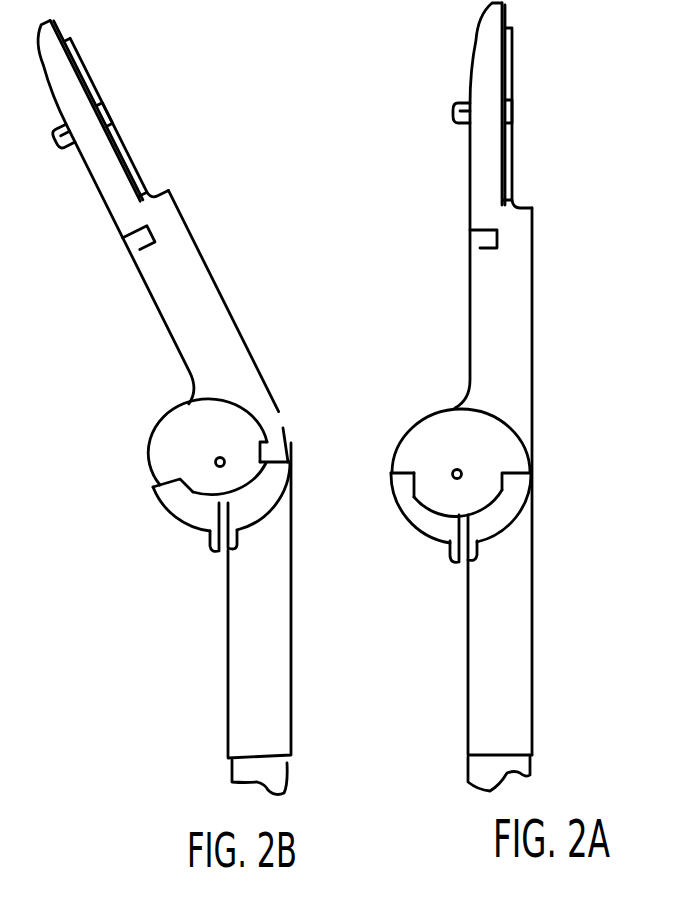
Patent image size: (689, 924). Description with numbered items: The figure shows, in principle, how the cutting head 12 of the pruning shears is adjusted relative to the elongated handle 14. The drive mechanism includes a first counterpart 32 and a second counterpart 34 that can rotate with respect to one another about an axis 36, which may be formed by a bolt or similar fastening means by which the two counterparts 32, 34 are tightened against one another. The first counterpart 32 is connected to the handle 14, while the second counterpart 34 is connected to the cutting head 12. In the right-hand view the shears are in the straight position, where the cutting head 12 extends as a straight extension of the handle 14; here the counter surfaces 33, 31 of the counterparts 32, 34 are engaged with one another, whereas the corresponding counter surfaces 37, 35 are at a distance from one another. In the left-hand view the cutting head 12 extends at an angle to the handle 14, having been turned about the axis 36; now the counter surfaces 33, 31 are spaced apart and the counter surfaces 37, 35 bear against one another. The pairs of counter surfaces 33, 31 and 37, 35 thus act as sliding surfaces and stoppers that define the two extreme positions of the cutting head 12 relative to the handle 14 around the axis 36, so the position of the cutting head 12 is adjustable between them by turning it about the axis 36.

In FIG. 2A, the cutting head 12 is at (523, 281).
In FIG. 2B, the cutting head 12 is at (160, 293).
In FIG. 2A, the elongated handle 14 is at (523, 659).
In FIG. 2B, the elongated handle 14 is at (228, 673).
In FIG. 2B, the counter surface 31 is at (265, 442).
In FIG. 2A, the first counterpart 32 is at (495, 512).
In FIG. 2B, the first counterpart 32 is at (183, 513).
In FIG. 2B, the counter surface 33 is at (287, 462).
In FIG. 2A, the second counterpart 34 is at (455, 420).
In FIG. 2B, the second counterpart 34 is at (193, 422).
In FIG. 2A, the counter surface 35 is at (392, 472).
In FIG. 2A, the axis 36 is at (452, 471).
In FIG. 2B, the axis 36 is at (216, 461).
In FIG. 2A, the counter surface 37 is at (395, 500).